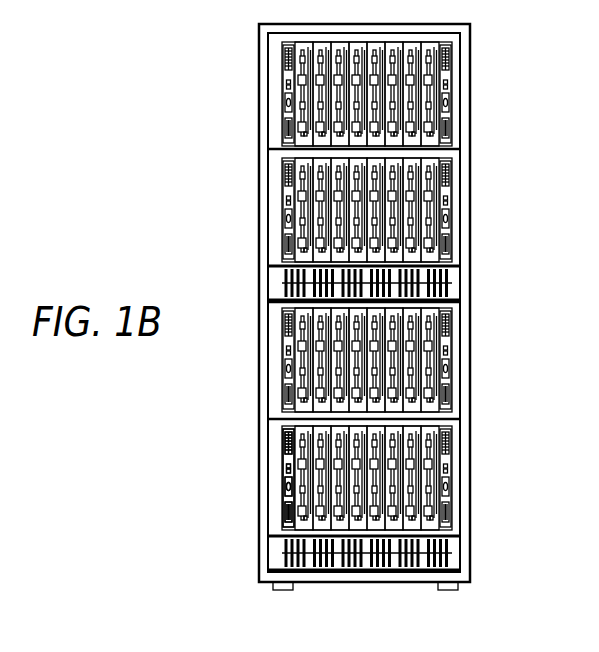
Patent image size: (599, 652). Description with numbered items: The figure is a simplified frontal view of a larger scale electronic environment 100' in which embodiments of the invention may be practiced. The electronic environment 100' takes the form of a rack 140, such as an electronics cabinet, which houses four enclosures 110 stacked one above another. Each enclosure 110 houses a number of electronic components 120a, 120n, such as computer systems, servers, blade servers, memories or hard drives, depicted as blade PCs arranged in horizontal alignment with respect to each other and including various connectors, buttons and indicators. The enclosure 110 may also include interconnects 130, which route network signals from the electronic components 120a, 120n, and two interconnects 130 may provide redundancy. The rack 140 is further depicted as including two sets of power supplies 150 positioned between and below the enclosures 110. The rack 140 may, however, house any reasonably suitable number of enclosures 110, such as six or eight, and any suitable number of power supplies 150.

The electronic environment 100' is at (287, 307).
The rack 140 is at (259, 63).
The enclosure 110 is at (268, 108).
The power supplies 150 is at (272, 288).
The electronic component 120a is at (288, 384).
The electronic component 120n is at (437, 474).
The interconnect 130 is at (286, 470).